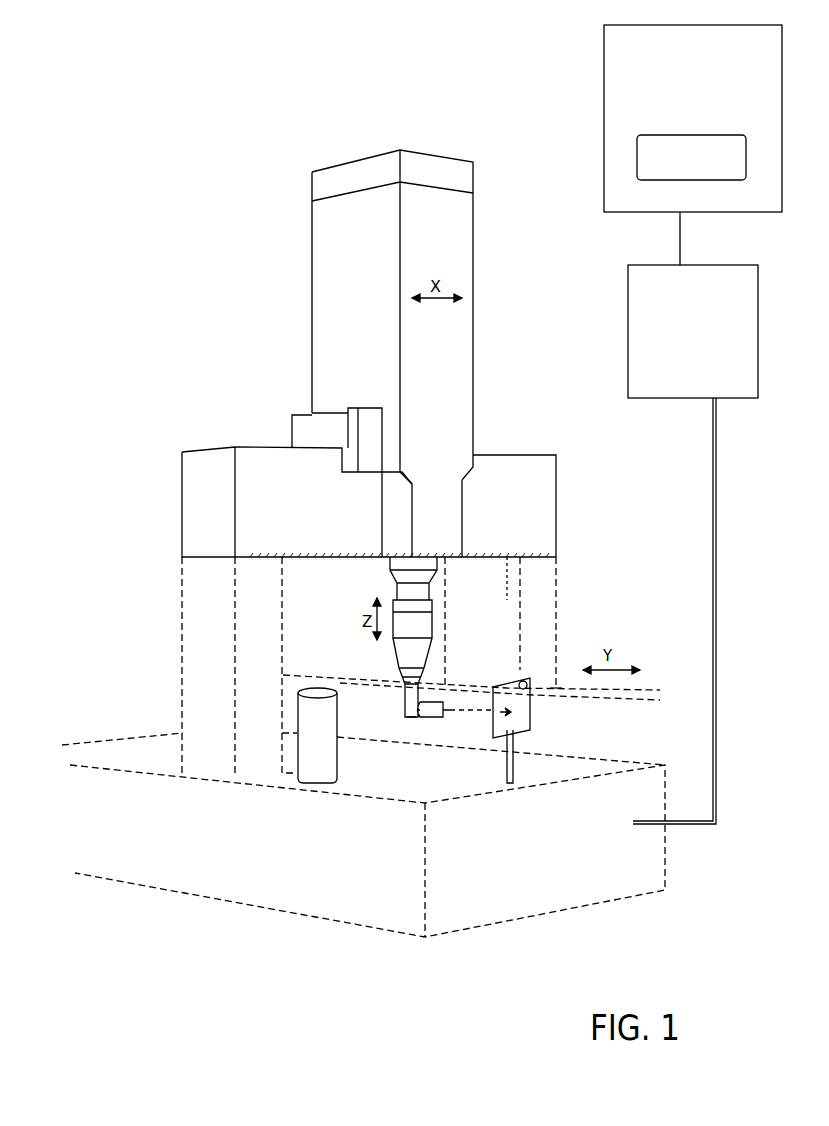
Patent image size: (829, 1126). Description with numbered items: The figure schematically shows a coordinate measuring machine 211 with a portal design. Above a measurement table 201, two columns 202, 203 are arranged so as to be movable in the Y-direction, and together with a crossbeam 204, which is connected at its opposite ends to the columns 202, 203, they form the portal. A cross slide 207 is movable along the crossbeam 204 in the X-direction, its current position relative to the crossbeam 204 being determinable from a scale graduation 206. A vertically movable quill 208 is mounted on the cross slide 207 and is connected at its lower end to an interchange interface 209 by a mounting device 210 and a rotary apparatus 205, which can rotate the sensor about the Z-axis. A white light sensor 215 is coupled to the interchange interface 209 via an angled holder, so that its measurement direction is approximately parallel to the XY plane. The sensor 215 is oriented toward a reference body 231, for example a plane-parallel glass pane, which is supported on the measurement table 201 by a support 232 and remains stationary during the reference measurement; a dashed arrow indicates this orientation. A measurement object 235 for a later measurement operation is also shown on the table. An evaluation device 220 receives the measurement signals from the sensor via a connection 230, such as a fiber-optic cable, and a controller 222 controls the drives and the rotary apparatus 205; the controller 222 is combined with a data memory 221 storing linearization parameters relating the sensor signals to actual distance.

The measurement table 201 is at (127, 741).
The column 202 is at (557, 633).
The column 203 is at (183, 633).
The crossbeam 204 is at (218, 447).
The rotary apparatus 205 is at (395, 638).
The scale graduation 206 is at (506, 602).
The cross slide 207 is at (311, 270).
The quill 208 is at (440, 565).
The interchange interface 209 is at (412, 681).
The mounting device 210 is at (393, 600).
The coordinate measuring machine 211 is at (167, 912).
The white light sensor 215 is at (413, 718).
The evaluation device 220 is at (657, 383).
The data memory 221 is at (657, 156).
The controller 222 is at (603, 110).
The connection 230 is at (718, 574).
The reference body 231 is at (531, 721).
The support 232 is at (505, 765).
The measurement object 235 is at (339, 762).